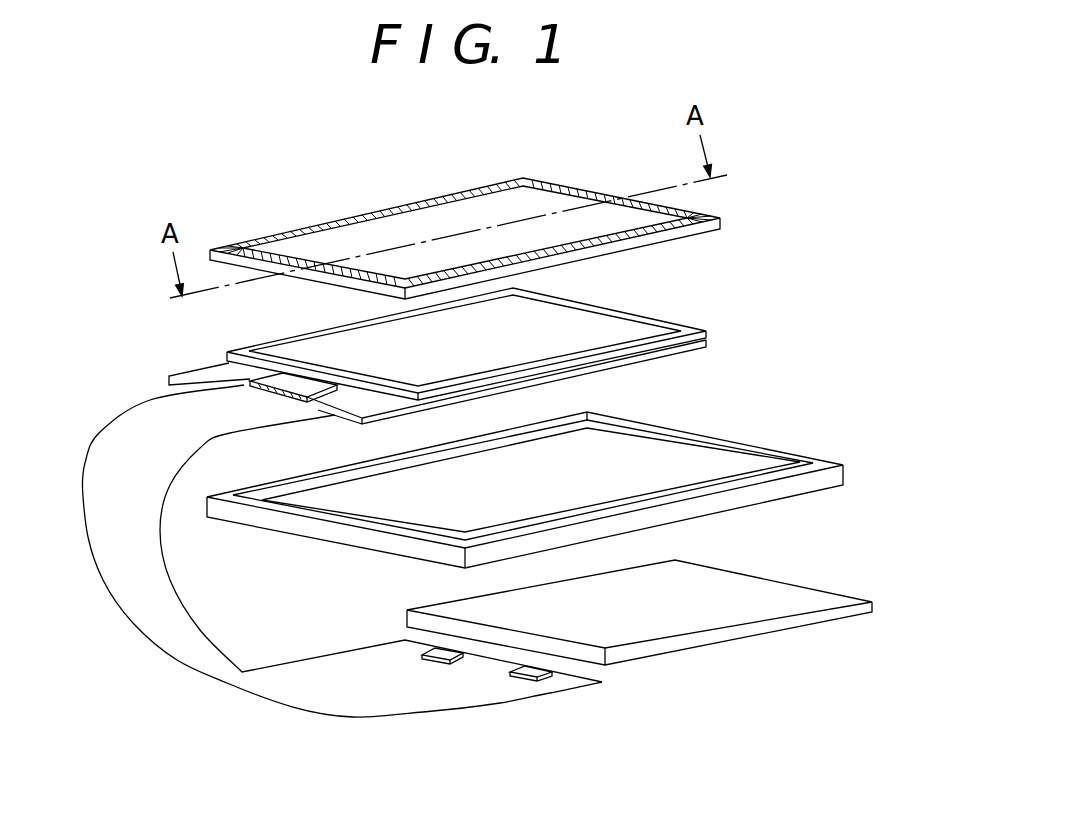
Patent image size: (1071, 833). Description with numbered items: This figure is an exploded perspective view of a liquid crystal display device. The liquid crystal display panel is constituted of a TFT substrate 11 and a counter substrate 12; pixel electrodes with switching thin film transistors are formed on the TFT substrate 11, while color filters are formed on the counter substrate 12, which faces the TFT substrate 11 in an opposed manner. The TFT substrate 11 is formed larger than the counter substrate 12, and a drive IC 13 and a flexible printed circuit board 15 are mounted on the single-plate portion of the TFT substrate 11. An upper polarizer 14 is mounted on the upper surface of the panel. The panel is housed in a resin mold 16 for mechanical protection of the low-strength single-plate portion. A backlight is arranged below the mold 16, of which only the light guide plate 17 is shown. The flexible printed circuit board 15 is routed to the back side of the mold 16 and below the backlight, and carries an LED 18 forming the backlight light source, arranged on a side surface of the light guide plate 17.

The TFT substrate 11 is at (690, 343).
The counter substrate 12 is at (707, 332).
The drive IC 13 is at (280, 383).
The upper polarizer 14 is at (577, 315).
The flexible printed circuit board 15 is at (142, 415).
The mold 16 is at (685, 430).
The light guide plate 17 is at (703, 577).
The LED 18 is at (435, 660).